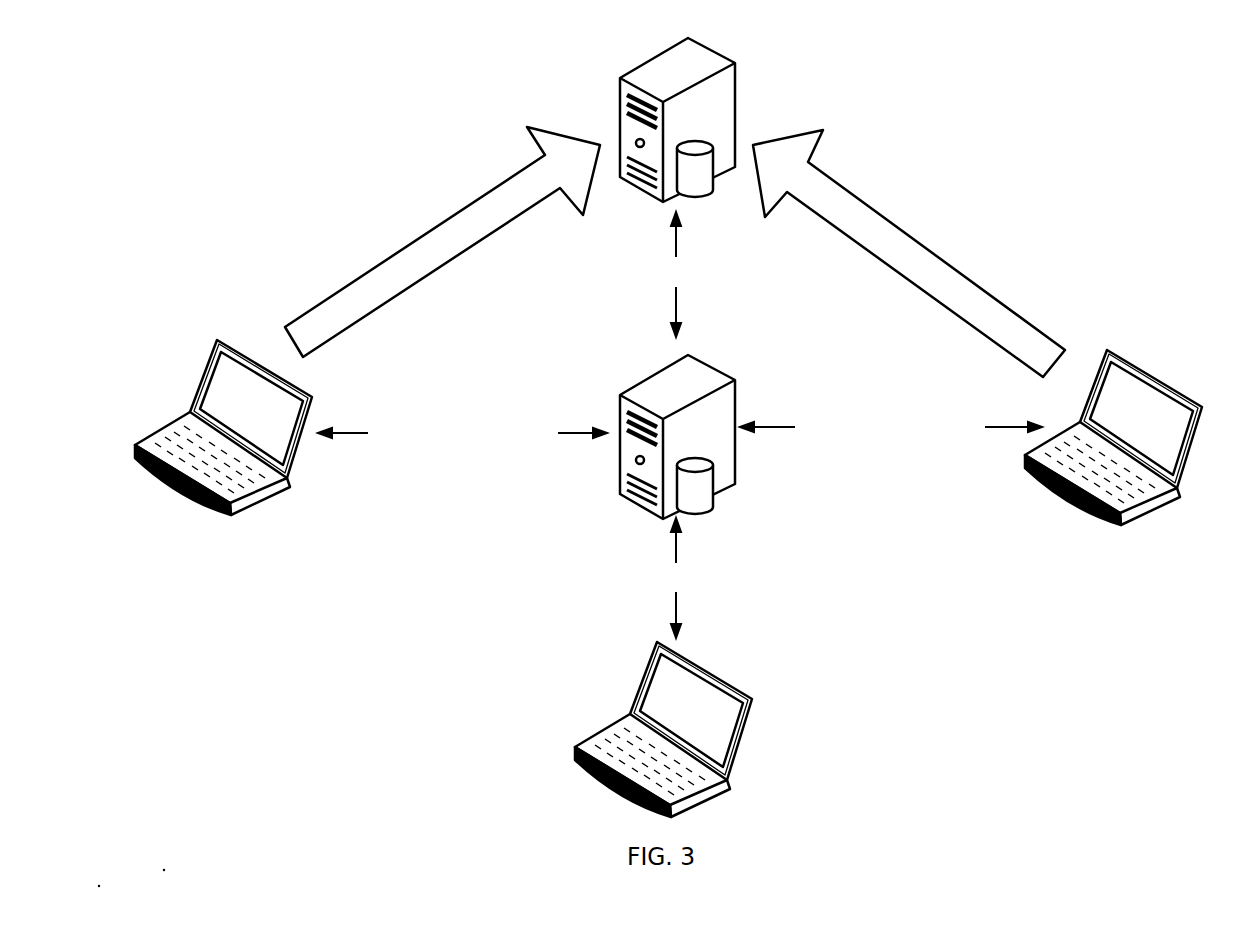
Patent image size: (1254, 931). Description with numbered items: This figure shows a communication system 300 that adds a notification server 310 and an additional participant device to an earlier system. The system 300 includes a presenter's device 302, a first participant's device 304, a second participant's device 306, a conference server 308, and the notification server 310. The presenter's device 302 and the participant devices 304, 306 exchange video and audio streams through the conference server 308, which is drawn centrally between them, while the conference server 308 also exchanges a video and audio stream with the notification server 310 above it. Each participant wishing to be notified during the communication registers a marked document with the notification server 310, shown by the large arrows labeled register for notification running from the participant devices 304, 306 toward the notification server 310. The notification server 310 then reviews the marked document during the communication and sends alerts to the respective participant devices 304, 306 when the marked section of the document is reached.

The system 300 is at (990, 82).
The presenter's device 302 is at (723, 780).
The first participant's device 304 is at (278, 482).
The second participant's device 306 is at (1150, 503).
The conference server 308 is at (723, 487).
The notification server 310 is at (737, 115).